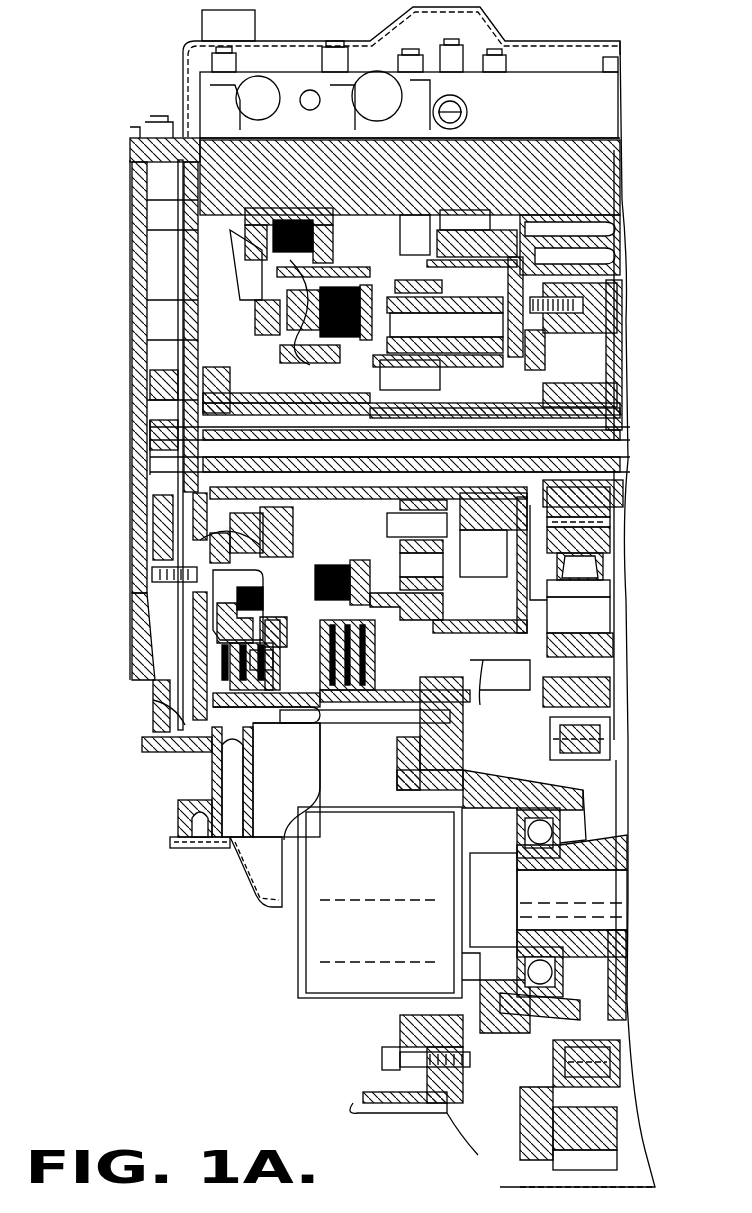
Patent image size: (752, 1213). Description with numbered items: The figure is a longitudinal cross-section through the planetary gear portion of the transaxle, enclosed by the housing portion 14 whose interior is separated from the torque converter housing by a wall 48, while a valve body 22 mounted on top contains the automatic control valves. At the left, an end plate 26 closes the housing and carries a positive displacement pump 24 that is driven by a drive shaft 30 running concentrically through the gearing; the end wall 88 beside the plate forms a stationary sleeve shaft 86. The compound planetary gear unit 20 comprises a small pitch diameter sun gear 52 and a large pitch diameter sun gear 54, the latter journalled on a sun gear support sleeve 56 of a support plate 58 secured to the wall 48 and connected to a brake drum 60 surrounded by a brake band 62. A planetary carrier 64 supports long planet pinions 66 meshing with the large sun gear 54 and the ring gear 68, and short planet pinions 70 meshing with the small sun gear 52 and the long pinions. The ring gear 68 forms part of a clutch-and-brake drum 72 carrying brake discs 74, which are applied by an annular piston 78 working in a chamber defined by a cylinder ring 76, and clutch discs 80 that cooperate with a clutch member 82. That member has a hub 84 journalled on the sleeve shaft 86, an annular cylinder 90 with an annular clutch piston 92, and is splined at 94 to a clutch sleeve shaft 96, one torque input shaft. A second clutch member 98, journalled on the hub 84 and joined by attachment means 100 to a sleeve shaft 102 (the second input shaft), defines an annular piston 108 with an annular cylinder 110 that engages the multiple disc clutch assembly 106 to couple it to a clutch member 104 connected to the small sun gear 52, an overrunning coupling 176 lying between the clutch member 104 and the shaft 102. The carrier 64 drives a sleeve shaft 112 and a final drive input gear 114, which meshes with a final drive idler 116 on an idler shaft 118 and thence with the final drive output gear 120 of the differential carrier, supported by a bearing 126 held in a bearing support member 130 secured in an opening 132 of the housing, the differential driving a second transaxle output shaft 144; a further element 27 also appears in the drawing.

The housing portion 14 is at (185, 137).
The valve body 22 is at (527, 100).
The end wall 88 is at (195, 210).
The end plate 26 is at (138, 250).
The annular cylinder 90 is at (200, 275).
The annular clutch piston 92 is at (245, 312).
The second clutch member 98 is at (210, 322).
The positive displacement pump 24 is at (255, 356).
The hub 84 is at (320, 388).
The drive shaft 30 is at (200, 425).
The stationary sleeve shaft 86 is at (290, 447).
The spline 94 is at (275, 492).
The clutch sleeve shaft 96 is at (275, 522).
The annular piston 108 is at (165, 570).
The annular cylinder 110 is at (240, 598).
The clutch discs 80 is at (283, 236).
The clutch member 82 is at (262, 189).
The clutch-and-brake drum 72 is at (362, 198).
The brake discs 74 is at (376, 200).
The ring gear 68 is at (425, 212).
The long planet pinions 66 is at (460, 248).
The brake band 62 is at (492, 226).
The compound planetary gear unit 20 is at (495, 300).
The brake drum 60 is at (522, 262).
The sun gear support sleeve 56 is at (535, 320).
The wall 48 is at (615, 296).
The support plate 58 is at (585, 338).
The sleeve shaft 102 is at (540, 387).
The sleeve shaft 112 is at (540, 402).
The small pitch diameter sun gear 52 is at (432, 366).
The overrunning coupling 176 is at (447, 410).
The attachment means 100 is at (442, 545).
The clutch member 104 is at (392, 560).
The gear 27 is at (462, 580).
The final drive input gear 114 is at (592, 500).
The large pitch diameter sun gear 54 is at (560, 546).
The idler shaft 118 is at (600, 606).
The final drive idler 116 is at (592, 645).
The short planet pinions 70 is at (500, 580).
The planetary carrier 64 is at (518, 585).
The cylinder ring 76 is at (420, 700).
The annular piston 78 is at (325, 792).
The multiple disc clutch assembly 106 is at (283, 662).
The second transaxle output shaft 144 is at (592, 895).
The bearing support member 130 is at (432, 1000).
The opening 132 is at (402, 1040).
The bearing 126 is at (532, 1000).
The final drive output gear 120 is at (622, 1117).